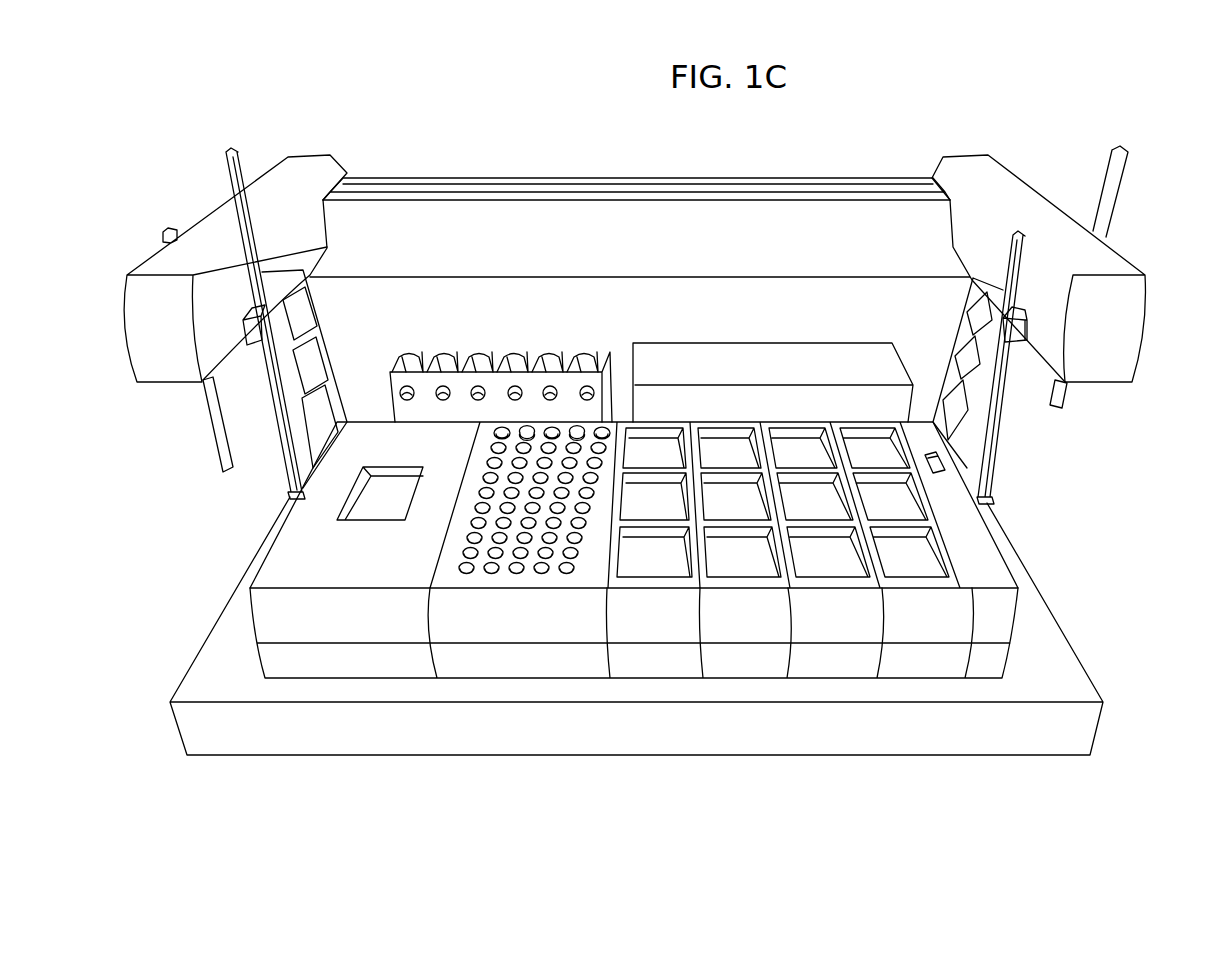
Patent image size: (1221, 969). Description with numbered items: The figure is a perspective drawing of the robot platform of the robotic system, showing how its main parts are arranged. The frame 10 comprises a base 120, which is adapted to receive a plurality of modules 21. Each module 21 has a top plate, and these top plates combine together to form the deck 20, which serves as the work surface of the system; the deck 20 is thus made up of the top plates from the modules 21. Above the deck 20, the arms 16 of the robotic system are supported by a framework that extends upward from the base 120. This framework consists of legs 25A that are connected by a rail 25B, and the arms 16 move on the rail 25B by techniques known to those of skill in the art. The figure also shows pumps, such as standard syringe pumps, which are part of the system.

The frame 10 is at (1110, 632).
The arms 16 is at (158, 260).
The deck 20 is at (985, 568).
The modules 21 is at (760, 632).
The legs 25A is at (312, 326).
The rail 25B is at (857, 178).
The base 120 is at (1063, 692).